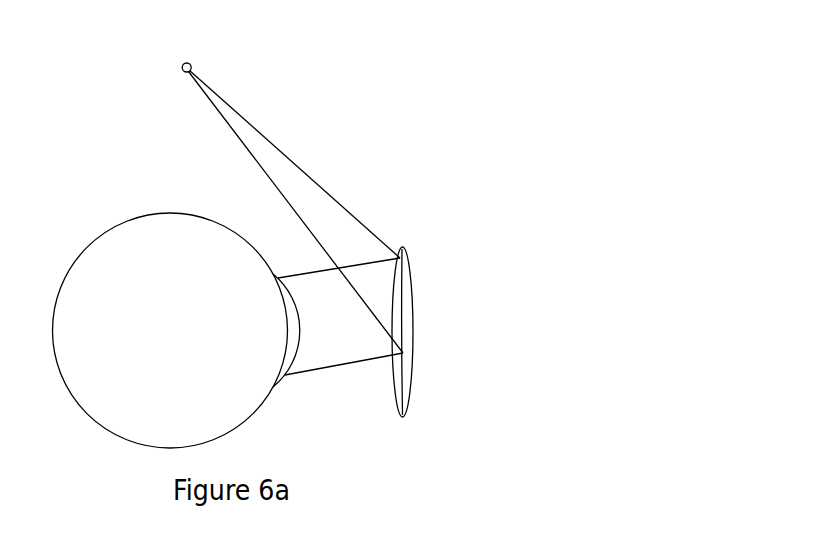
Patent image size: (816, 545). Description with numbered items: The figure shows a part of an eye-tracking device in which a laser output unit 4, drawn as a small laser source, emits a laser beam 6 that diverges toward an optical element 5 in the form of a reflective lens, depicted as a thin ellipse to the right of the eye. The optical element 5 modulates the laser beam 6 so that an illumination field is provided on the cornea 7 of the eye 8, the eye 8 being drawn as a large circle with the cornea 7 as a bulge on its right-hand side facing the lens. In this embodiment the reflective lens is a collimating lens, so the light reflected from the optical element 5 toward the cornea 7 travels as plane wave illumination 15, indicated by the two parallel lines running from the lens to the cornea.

The laser output unit 4 is at (182, 68).
The laser beam 6 is at (290, 158).
The cornea 7 is at (292, 278).
The eye 8 is at (179, 342).
The plane wave illumination 15 is at (340, 328).
The optical element 5 is at (405, 385).